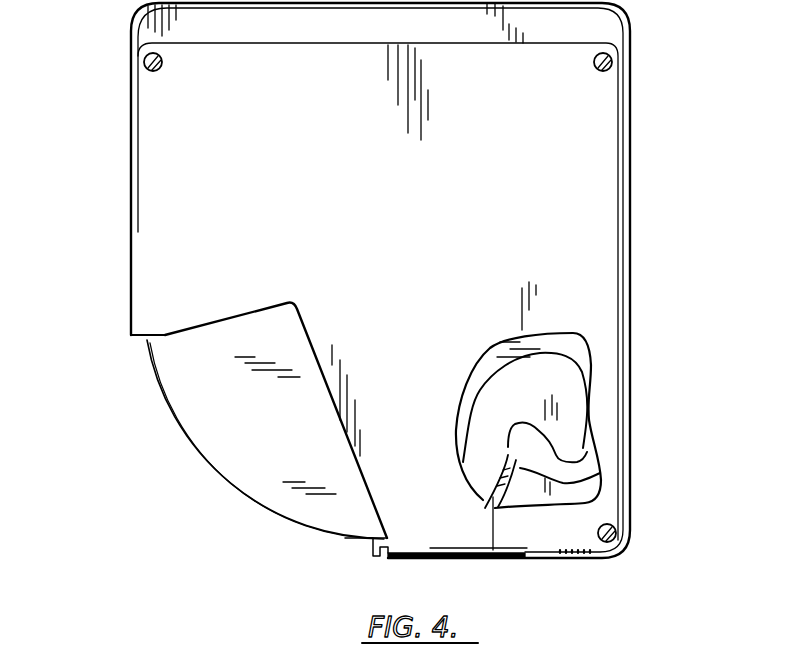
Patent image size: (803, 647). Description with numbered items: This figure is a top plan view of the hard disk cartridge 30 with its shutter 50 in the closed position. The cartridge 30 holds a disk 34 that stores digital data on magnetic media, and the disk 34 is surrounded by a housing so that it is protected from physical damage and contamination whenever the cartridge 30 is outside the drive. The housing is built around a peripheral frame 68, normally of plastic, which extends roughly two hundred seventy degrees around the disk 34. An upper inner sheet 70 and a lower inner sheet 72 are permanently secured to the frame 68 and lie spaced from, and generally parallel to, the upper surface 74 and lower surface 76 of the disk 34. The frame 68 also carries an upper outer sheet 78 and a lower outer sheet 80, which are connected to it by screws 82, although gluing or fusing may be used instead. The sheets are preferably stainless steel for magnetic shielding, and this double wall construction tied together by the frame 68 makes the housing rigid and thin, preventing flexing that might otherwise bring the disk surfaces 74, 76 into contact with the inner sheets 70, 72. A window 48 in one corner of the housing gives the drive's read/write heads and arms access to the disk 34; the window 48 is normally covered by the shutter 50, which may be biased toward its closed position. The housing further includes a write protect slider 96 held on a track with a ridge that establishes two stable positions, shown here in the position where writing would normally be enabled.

The hard disk cartridge 30 is at (124, 208).
The peripheral frame 68 is at (621, 35).
The upper outer sheet 78 is at (605, 286).
The screws 82 is at (142, 70).
The window 48 is at (186, 350).
The shutter 50 is at (184, 450).
The upper inner sheet 70 is at (485, 367).
The upper surface of the disk 74 is at (572, 383).
The lower inner sheet 72 is at (552, 450).
The lower outer sheet 80 is at (590, 490).
The disk 34 is at (478, 467).
The lower surface of the disk 76 is at (493, 550).
The write protect slider 96 is at (575, 557).